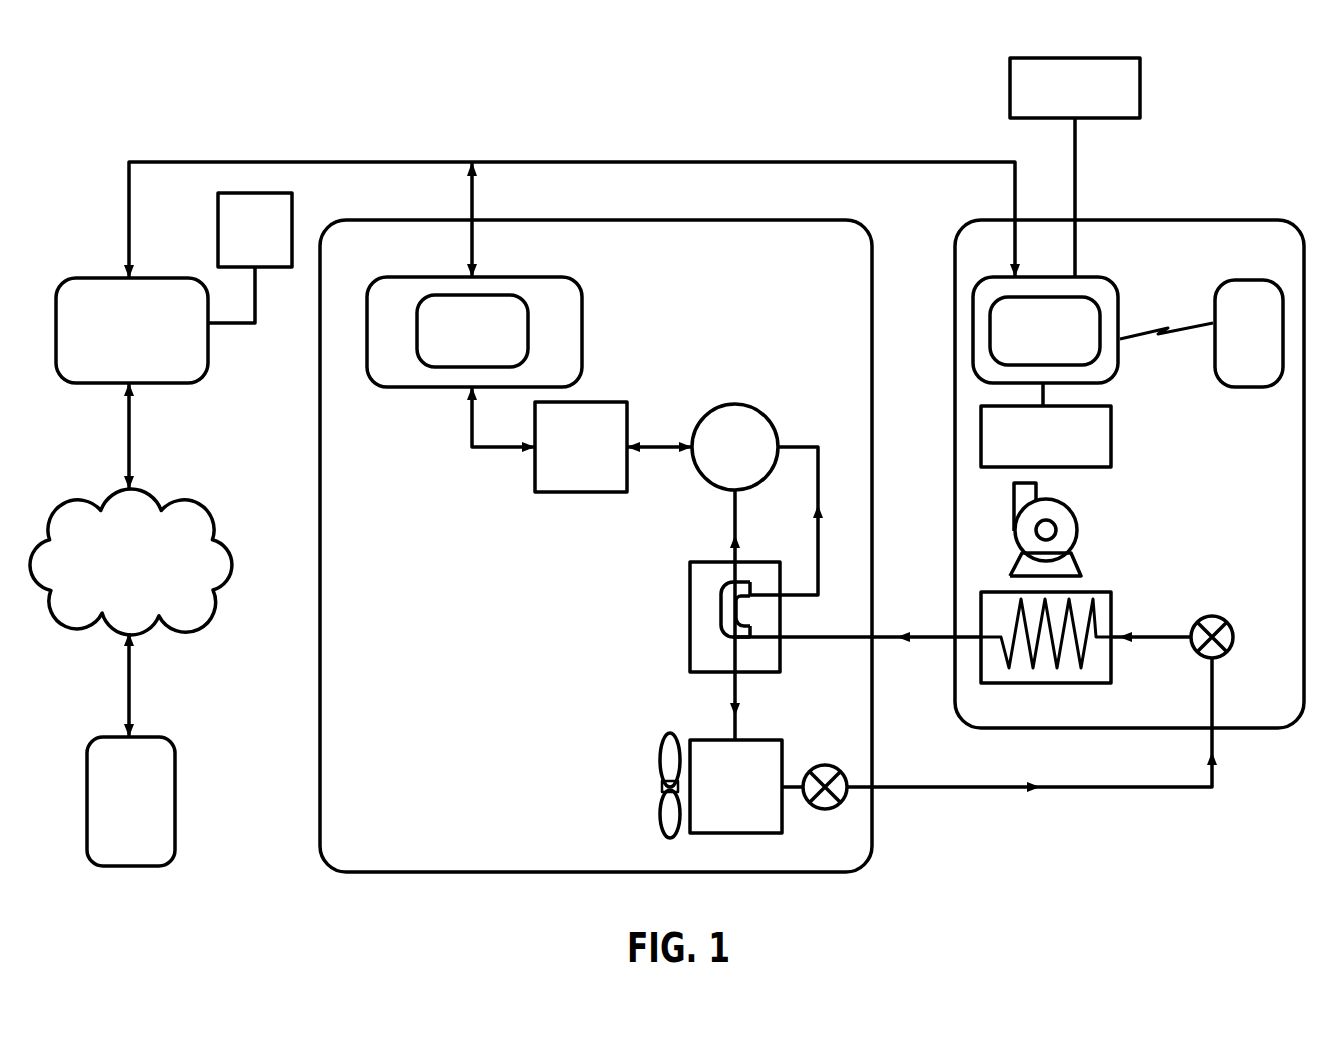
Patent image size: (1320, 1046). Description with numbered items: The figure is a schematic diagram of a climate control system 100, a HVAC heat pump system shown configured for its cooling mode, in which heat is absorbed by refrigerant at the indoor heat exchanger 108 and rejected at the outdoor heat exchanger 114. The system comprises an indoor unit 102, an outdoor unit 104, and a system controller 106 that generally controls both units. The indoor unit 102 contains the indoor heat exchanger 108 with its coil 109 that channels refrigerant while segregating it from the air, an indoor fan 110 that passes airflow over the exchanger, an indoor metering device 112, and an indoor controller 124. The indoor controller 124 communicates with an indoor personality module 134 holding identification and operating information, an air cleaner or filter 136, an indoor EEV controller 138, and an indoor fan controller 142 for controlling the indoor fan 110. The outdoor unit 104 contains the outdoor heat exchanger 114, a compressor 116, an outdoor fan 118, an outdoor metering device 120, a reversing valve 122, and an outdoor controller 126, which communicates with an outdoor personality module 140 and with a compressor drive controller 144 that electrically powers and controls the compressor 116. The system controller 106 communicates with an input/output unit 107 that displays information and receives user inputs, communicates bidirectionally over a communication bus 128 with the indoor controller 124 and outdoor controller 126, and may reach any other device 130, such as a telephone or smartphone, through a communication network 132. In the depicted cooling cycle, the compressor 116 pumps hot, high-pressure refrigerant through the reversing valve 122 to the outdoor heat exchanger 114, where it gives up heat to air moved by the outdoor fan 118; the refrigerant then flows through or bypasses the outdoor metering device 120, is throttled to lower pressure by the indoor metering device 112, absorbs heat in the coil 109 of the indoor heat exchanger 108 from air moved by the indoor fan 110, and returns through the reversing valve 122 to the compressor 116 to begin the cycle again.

The climate control system 100 is at (146, 45).
The indoor unit 102 is at (1225, 218).
The outdoor unit 104 is at (735, 218).
The system controller 106 is at (112, 343).
The input/output (I/O) unit 107 is at (235, 243).
The indoor heat exchanger 108 is at (1043, 684).
The coil 109 is at (1082, 648).
The indoor fan 110 is at (1077, 513).
The indoor metering device 112 is at (1212, 616).
The outdoor heat exchanger 114 is at (716, 800).
The compressor 116 is at (715, 460).
The outdoor fan 118 is at (660, 780).
The outdoor metering device 120 is at (826, 764).
The reversing valve 122 is at (690, 612).
The indoor controller 124 is at (1120, 285).
The outdoor controller 126 is at (583, 308).
The communication bus 128 is at (610, 162).
The other device 130 is at (111, 814).
The communication network 132 is at (111, 574).
The indoor personality module 134 is at (1025, 344).
The air cleaner or filter 136 is at (1055, 101).
The indoor EEV controller 138 is at (1229, 346).
The outdoor personality module 140 is at (452, 344).
The indoor fan controller 142 is at (1026, 449).
The compressor drive controller 144 is at (561, 460).